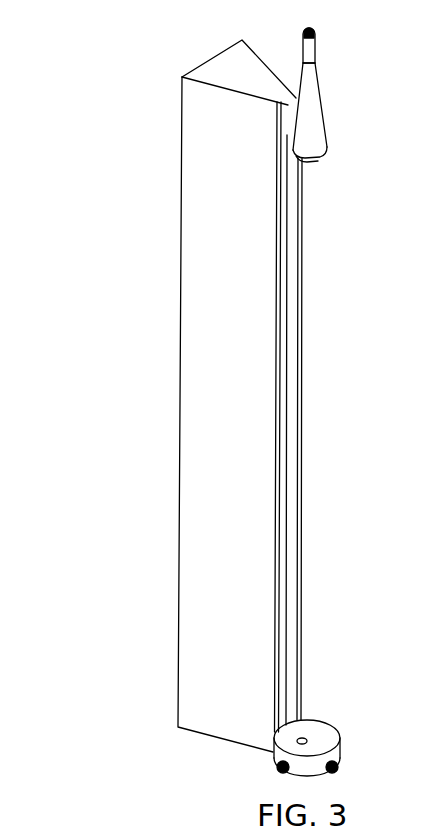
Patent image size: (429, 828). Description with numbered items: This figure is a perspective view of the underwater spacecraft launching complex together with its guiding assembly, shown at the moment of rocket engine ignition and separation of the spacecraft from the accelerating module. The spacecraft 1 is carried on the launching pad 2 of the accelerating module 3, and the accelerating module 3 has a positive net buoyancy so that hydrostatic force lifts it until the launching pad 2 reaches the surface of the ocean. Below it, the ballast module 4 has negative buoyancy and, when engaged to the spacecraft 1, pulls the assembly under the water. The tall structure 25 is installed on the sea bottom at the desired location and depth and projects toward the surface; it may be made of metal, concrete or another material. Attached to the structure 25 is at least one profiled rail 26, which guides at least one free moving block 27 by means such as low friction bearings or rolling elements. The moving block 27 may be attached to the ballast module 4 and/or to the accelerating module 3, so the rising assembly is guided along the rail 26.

The spacecraft 1 is at (316, 44).
The launching pad 2 is at (316, 66).
The accelerating module 3 is at (328, 139).
The ballast module 4 is at (313, 733).
The structure 25 is at (203, 63).
The profiled rail 26 is at (275, 116).
The moving block 27 is at (277, 138).